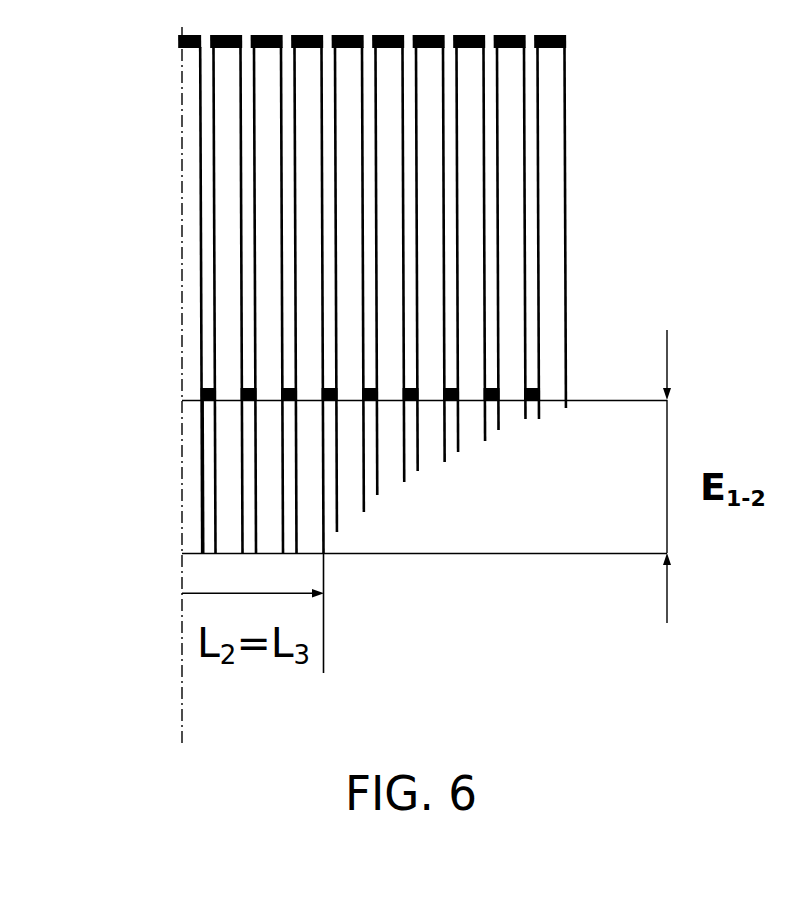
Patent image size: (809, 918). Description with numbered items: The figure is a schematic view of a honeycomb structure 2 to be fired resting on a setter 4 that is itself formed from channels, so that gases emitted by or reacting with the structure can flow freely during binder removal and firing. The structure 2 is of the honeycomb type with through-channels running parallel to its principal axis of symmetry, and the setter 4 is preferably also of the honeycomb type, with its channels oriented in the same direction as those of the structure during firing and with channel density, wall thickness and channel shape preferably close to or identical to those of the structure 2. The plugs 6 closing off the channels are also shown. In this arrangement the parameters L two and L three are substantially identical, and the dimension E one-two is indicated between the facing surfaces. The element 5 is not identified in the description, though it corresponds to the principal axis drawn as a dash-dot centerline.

The structure to be fired 2 is at (202, 228).
The setter 4 is at (193, 466).
The axis of symmetry 5 is at (166, 706).
The plugs 6 is at (467, 217).